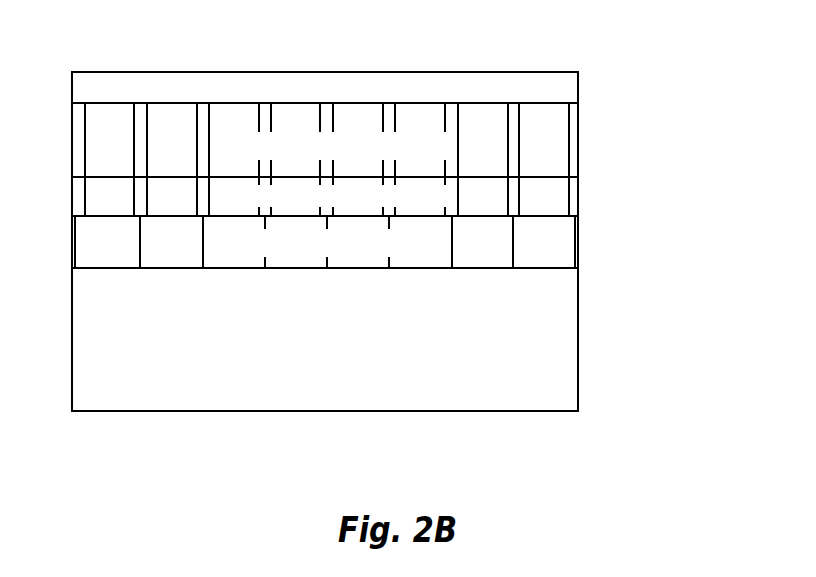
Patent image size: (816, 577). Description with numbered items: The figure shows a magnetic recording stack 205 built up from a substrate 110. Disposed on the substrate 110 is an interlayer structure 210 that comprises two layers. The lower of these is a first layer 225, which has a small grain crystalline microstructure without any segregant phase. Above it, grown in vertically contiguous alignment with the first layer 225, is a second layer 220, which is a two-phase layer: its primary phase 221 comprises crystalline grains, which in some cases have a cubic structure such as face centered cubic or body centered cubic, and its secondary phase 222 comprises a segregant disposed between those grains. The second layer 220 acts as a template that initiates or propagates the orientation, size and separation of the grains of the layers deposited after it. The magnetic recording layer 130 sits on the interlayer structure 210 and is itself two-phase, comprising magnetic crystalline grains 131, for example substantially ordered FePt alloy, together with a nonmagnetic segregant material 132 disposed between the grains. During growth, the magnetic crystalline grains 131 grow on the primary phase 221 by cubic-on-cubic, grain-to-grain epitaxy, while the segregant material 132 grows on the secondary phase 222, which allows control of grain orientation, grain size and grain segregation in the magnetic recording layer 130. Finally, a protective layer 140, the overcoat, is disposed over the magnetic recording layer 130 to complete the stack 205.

The stack 205 is at (289, 50).
The substrate 110 is at (579, 358).
The protective layer 140 is at (575, 87).
The magnetic recording layer 130 is at (582, 137).
The segregant material 132 is at (82, 132).
The magnetic crystalline grains 131 is at (97, 130).
The interlayer structure 210 is at (648, 176).
The second layer 220 is at (582, 196).
The secondary phase 222 is at (82, 197).
The primary phase 221 is at (90, 197).
The first layer 225 is at (582, 248).